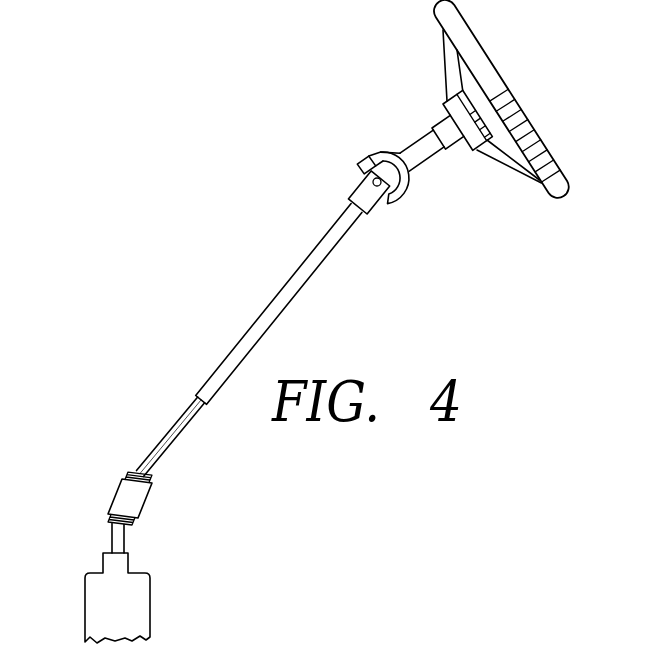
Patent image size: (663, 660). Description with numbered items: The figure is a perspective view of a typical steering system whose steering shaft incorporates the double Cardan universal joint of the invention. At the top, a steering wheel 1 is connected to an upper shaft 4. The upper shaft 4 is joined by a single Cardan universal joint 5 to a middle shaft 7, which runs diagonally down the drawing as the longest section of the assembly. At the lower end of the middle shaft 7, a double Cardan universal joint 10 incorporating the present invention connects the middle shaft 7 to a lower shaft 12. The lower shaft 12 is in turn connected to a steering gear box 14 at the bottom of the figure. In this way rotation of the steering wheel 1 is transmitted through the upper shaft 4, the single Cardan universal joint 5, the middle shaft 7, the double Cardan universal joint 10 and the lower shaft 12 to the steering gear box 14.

The steering wheel 1 is at (487, 63).
The upper shaft 4 is at (423, 154).
The single Cardan universal joint 5 is at (366, 159).
The middle shaft 7 is at (231, 354).
The double Cardan universal joint 10 is at (113, 482).
The lower shaft 12 is at (125, 546).
The steering gear box 14 is at (97, 622).